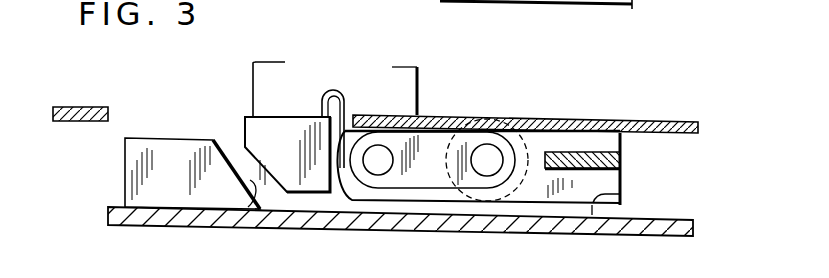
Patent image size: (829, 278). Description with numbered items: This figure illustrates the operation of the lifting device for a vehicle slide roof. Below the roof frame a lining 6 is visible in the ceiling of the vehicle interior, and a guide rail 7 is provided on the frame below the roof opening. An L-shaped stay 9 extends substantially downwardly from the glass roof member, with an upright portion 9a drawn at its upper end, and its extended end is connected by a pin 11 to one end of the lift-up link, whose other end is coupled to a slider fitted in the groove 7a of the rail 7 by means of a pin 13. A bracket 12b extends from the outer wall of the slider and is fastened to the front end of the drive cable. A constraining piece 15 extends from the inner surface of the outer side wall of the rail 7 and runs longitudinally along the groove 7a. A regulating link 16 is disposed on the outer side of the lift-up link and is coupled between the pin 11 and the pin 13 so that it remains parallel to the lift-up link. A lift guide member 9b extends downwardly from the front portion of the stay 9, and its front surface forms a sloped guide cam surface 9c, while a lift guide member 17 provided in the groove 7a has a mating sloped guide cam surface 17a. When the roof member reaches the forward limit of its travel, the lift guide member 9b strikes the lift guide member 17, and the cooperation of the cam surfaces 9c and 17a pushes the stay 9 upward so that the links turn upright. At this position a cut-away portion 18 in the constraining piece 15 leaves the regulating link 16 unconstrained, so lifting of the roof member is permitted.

The lining 6 is at (514, 11).
The guide rail 7 is at (620, 239).
The groove 7a is at (621, 200).
The stay 9 is at (397, 88).
The upright portion of contact spring 9a is at (404, 98).
The lift guide member 9b is at (305, 192).
The sloped guide cam surface 9c is at (256, 157).
The pin 11 is at (378, 165).
The bracket 12b is at (621, 160).
The pin 13 is at (487, 153).
The constraining piece 15 is at (603, 122).
The regulating link 16 is at (430, 175).
The lift guide member 17 is at (163, 150).
The sloped guide cam surface 17a is at (248, 208).
The cut-away portion 18 is at (348, 118).